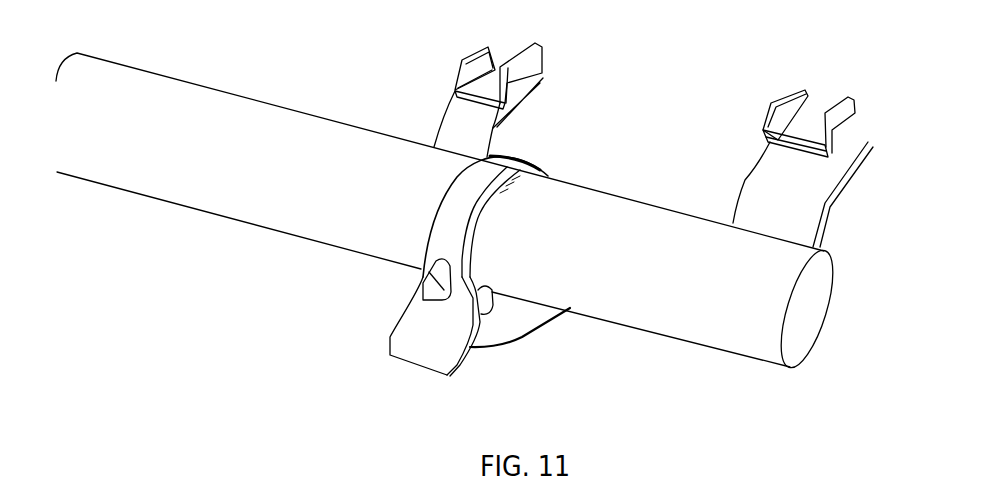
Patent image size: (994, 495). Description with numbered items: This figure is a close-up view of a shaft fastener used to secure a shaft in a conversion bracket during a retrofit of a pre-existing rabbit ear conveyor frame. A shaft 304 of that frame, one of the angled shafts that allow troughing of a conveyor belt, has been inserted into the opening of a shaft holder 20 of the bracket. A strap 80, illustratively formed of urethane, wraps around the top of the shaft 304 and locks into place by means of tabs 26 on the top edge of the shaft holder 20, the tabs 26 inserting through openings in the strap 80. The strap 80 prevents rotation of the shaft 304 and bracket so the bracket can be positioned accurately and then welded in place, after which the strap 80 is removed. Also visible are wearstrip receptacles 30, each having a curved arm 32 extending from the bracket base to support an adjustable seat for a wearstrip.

The shaft holder 20 is at (511, 328).
The tab 26 is at (430, 288).
The wearstrip receptacle 30 is at (742, 93).
The curved arm 32 is at (735, 182).
The strap 80 is at (398, 350).
The shaft 304 is at (668, 307).